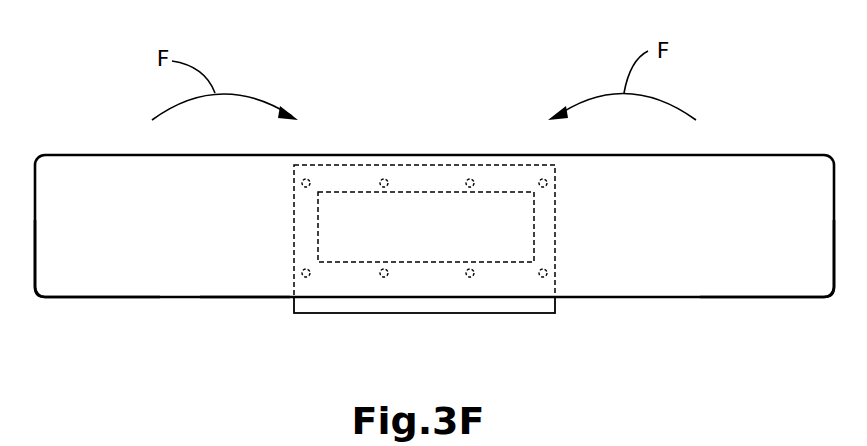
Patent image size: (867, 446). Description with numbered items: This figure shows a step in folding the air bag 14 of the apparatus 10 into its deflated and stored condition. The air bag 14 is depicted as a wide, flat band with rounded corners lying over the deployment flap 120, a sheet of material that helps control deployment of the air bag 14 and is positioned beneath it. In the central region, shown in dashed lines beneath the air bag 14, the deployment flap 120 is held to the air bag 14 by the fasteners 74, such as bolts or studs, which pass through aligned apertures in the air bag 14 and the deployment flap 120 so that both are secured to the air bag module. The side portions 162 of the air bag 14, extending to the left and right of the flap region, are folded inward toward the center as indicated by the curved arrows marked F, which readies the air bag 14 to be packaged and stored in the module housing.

The apparatus 10 is at (321, 92).
The air bag 14 is at (234, 276).
The fasteners 74 is at (309, 180).
The deployment flap 120 is at (435, 305).
The side portions 162 is at (121, 258).